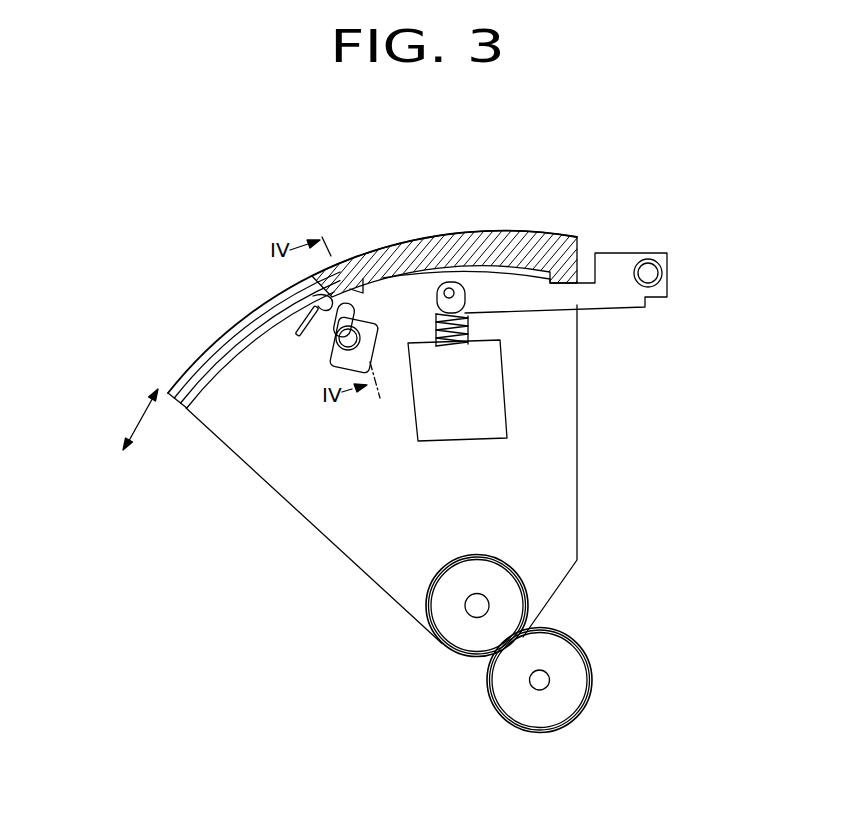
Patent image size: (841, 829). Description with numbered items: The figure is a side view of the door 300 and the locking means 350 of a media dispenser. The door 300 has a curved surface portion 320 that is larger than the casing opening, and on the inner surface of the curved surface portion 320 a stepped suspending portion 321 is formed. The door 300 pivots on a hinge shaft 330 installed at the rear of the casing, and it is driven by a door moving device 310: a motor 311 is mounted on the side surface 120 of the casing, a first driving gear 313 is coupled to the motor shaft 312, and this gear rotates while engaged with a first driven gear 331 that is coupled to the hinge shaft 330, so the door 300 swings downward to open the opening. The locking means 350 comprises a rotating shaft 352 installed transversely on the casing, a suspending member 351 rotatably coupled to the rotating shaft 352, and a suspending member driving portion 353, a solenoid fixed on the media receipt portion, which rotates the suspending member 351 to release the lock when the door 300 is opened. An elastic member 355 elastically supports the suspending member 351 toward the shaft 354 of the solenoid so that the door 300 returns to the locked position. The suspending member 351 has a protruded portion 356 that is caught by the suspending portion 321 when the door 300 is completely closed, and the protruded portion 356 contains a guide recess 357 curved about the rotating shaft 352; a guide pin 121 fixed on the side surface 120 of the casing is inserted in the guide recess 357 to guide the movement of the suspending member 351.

The door 300 is at (205, 232).
The door moving device 310 is at (590, 633).
The motor 311 is at (565, 687).
The motor shaft 312 is at (540, 679).
The first driving gear 313 is at (488, 697).
The curved surface portion 320 is at (197, 366).
The suspending portion 321 is at (282, 287).
The hinge shaft 330 is at (480, 603).
The first driven gear 331 is at (514, 568).
The locking means 350 is at (662, 307).
The suspending member 351 is at (383, 290).
The rotating shaft 352 is at (650, 273).
The suspending member driving portion 353 is at (480, 380).
The shaft of the solenoid 354 is at (438, 300).
The elastic member 355 is at (368, 328).
The protruded portion 356 is at (335, 287).
The guide recess 357 is at (317, 307).
The side surface 120 is at (543, 460).
The guide pin 121 is at (343, 349).